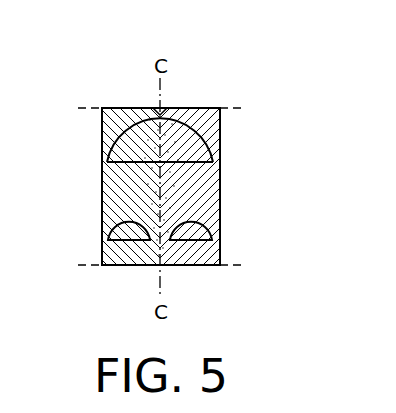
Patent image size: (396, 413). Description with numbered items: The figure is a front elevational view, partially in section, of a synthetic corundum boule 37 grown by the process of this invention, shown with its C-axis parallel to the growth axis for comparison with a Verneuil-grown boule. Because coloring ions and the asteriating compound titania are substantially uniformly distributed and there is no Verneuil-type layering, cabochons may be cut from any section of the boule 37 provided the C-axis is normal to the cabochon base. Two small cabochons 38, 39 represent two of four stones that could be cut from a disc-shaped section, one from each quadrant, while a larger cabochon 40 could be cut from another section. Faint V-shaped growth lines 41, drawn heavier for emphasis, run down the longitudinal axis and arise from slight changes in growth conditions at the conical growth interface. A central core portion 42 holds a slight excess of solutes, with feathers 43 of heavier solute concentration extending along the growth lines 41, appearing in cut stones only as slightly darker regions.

The boule 37 is at (228, 197).
The cabochon 38 is at (205, 235).
The cabochon 39 is at (118, 222).
The larger cabochon 40 is at (220, 124).
The growth lines 41 is at (112, 191).
The central core portion 42 is at (162, 110).
The feathers 43 is at (220, 163).